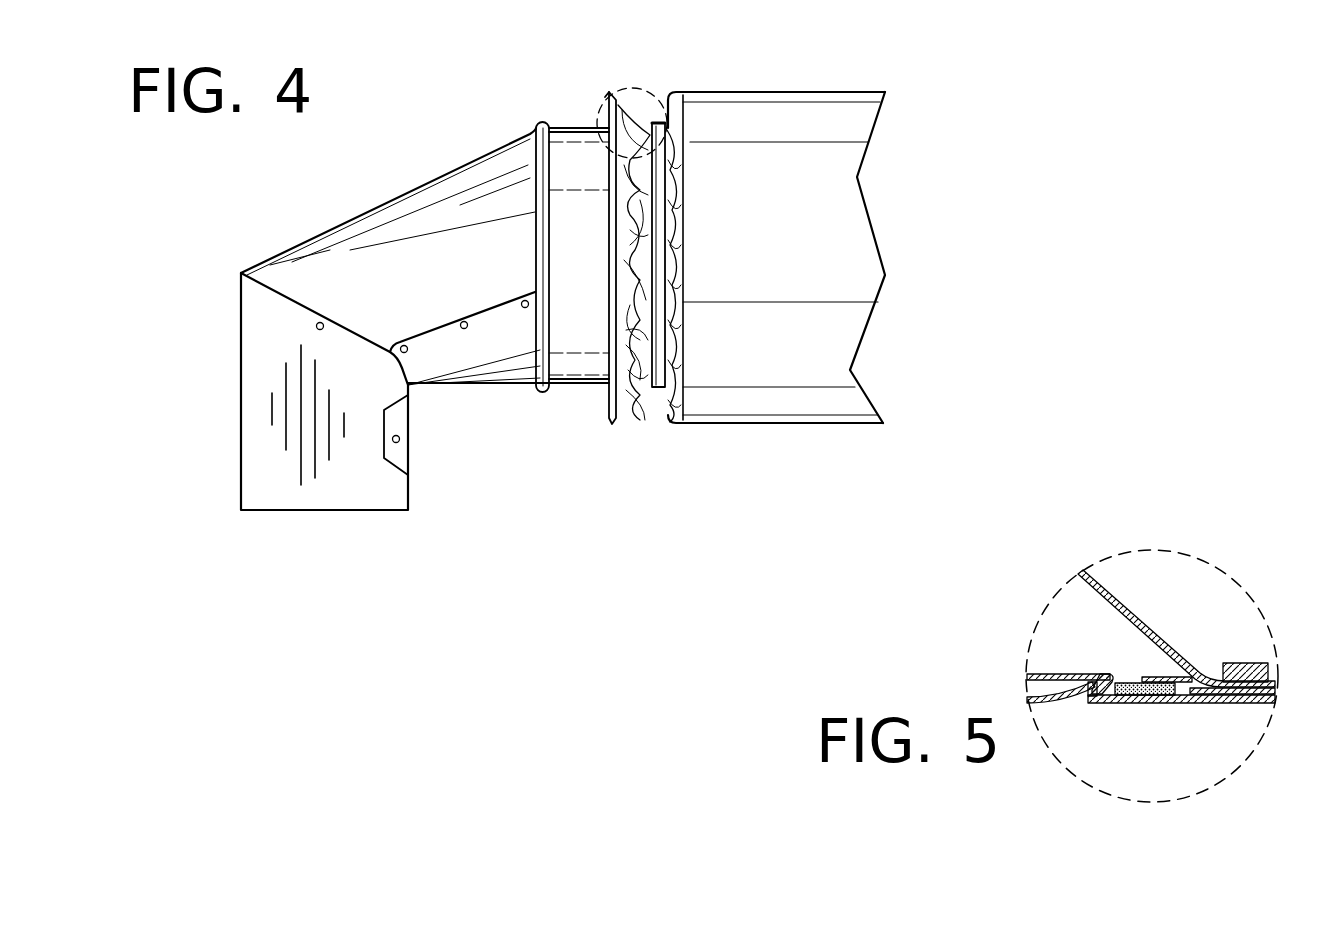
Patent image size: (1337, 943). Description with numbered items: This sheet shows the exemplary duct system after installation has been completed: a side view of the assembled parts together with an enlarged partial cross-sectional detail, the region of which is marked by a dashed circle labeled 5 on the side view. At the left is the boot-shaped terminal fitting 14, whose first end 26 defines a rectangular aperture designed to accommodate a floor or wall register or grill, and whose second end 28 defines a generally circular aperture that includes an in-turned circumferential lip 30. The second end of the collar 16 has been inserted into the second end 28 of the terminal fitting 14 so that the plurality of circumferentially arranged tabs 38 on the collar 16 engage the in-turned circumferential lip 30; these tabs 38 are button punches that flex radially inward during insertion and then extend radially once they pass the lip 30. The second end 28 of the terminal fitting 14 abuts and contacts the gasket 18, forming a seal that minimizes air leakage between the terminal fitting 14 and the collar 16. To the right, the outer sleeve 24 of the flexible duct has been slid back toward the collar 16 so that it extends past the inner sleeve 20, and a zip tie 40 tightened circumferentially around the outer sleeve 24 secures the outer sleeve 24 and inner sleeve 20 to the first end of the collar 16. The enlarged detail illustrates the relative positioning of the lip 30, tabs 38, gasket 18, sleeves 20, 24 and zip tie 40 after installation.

In FIG. 4, the detail area of FIG. 5 is at (633, 88).
In FIG. 4, the terminal fitting 14 is at (468, 385).
In FIG. 5, the terminal fitting 14 is at (1032, 672).
In FIG. 5, the collar 16 is at (1240, 704).
In FIG. 5, the gasket 18 is at (1148, 704).
In FIG. 5, the inner sleeve 20 is at (1192, 704).
In FIG. 4, the outer sleeve 24 is at (783, 90).
In FIG. 5, the outer sleeve 24 is at (1100, 587).
In FIG. 4, the first end 26 is at (315, 512).
In FIG. 5, the second end 28 is at (1080, 672).
In FIG. 5, the in-turned circumferential lip 30 is at (1107, 704).
In FIG. 5, the tabs 38 is at (1082, 698).
In FIG. 4, the zip tie 40 is at (657, 389).
In FIG. 5, the zip tie 40 is at (1240, 688).